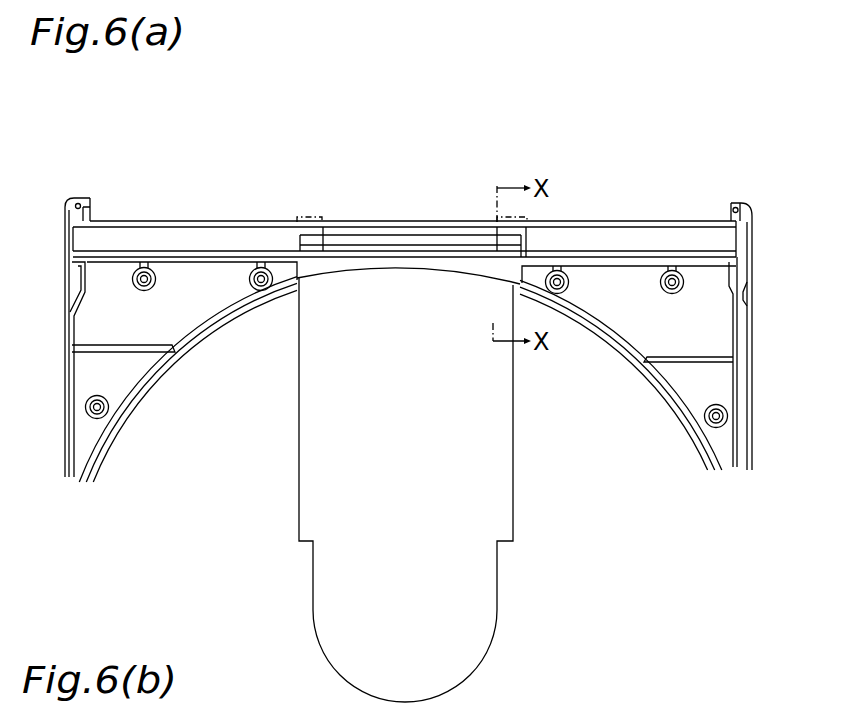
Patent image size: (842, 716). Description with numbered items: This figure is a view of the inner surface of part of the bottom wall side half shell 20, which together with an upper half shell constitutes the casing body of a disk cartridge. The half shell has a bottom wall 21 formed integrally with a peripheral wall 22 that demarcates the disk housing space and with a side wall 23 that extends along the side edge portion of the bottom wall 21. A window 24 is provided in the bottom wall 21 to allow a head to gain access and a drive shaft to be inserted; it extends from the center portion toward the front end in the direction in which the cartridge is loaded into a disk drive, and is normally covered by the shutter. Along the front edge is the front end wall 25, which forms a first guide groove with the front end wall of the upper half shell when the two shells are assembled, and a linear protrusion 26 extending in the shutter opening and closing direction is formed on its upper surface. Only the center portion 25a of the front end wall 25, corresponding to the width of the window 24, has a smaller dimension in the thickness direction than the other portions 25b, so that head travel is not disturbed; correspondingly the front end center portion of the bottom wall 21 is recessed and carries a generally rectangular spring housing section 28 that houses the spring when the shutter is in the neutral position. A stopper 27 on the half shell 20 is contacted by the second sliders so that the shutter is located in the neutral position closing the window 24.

The bottom wall side half shell 20 is at (228, 183).
The bottom wall 21 is at (221, 444).
The peripheral wall 22 is at (241, 313).
The side wall 23 is at (73, 317).
The window 24 is at (423, 422).
The front end wall 25 is at (173, 220).
The center portion of the front end wall 25a is at (436, 223).
The other portions of the front end wall 25b is at (585, 224).
The linear protrusion 26 is at (687, 232).
The stopper 27 is at (387, 232).
The spring housing section 28 is at (337, 248).